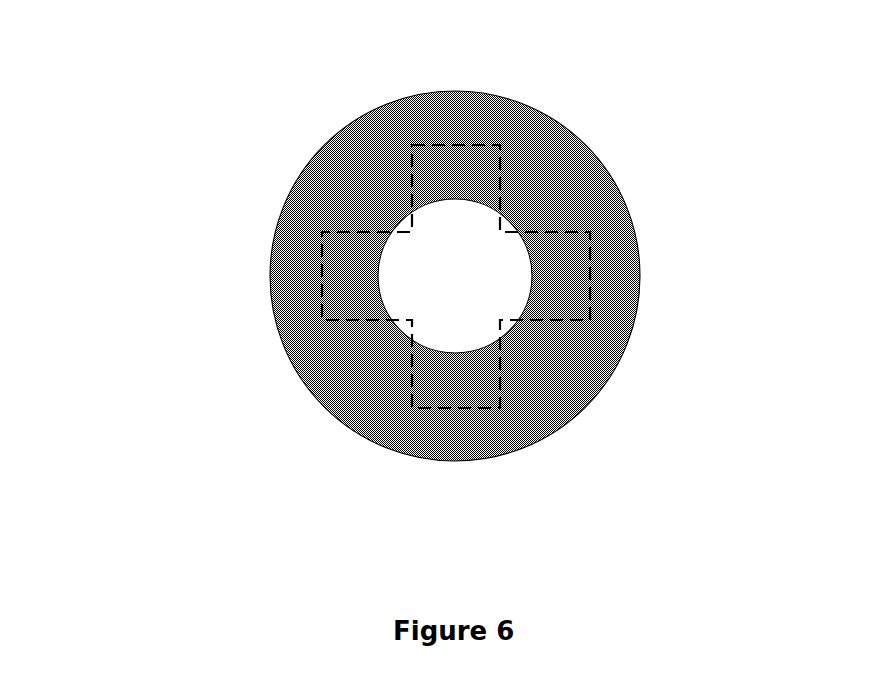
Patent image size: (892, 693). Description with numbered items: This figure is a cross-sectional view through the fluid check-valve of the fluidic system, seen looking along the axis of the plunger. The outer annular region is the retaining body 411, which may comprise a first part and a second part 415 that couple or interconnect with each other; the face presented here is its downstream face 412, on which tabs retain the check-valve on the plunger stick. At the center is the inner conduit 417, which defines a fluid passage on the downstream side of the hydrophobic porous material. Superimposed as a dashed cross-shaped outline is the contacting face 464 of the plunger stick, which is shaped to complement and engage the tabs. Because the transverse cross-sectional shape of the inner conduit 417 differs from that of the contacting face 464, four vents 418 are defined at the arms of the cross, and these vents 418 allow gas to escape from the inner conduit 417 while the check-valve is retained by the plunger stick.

The retaining body 411 is at (222, 58).
The downstream face 412 is at (308, 214).
The second part 415 is at (296, 168).
The inner conduit 417 is at (503, 266).
The vents 418 is at (405, 225).
The contacting face 464 is at (551, 335).